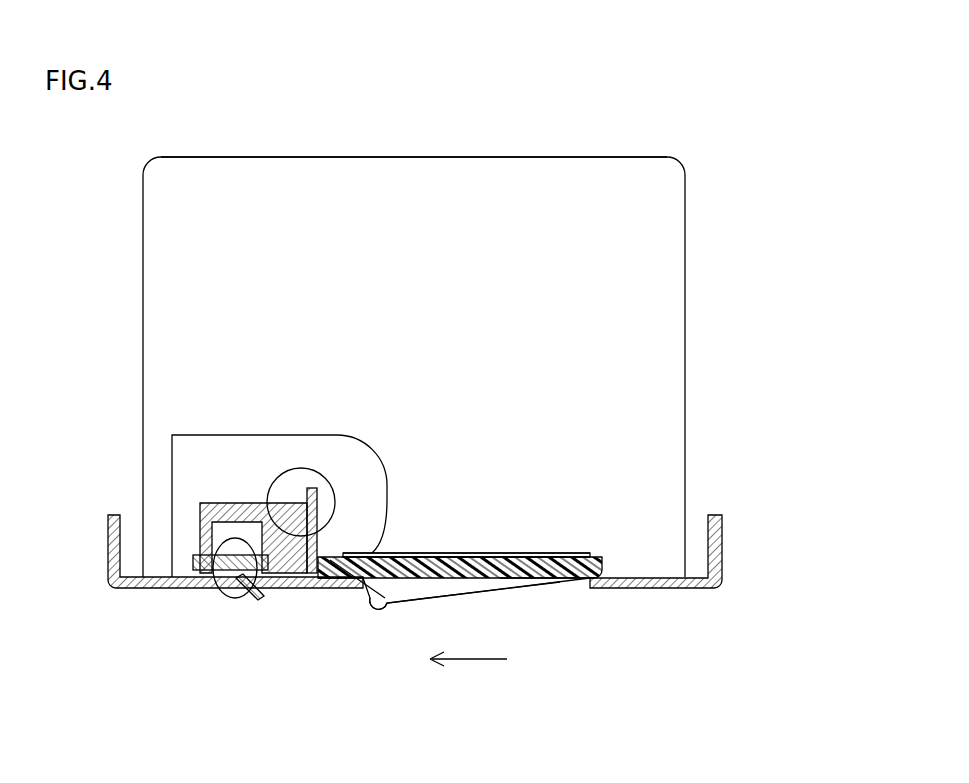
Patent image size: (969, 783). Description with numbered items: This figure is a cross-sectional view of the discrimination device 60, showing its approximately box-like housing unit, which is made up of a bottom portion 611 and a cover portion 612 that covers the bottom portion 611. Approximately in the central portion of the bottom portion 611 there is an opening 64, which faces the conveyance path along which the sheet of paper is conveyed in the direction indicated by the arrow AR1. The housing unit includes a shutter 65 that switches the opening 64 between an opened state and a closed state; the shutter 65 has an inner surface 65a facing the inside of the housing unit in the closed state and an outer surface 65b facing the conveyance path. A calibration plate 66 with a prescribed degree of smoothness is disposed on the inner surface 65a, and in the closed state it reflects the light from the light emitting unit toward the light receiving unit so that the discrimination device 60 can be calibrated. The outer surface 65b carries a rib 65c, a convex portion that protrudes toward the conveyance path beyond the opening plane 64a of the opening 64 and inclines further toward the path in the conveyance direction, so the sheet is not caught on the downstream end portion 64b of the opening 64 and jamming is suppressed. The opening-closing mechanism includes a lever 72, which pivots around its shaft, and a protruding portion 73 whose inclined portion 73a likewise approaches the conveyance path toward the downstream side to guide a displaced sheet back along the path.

The discrimination device 60 is at (700, 158).
The cover portion 612 is at (540, 157).
The bottom portion 611 is at (658, 590).
The lever 72 is at (235, 503).
The protruding portion 73 is at (232, 604).
The inclined portion 73a is at (258, 600).
The opening 64 is at (580, 585).
The opening plane 64a is at (535, 585).
The end portion 64b is at (353, 585).
The shutter 65 is at (560, 553).
The inner surface 65a is at (483, 553).
The outer surface 65b is at (478, 583).
The rib 65c is at (410, 600).
The calibration plate 66 is at (426, 553).
The arrow indicating conveyance direction AR1 is at (472, 662).